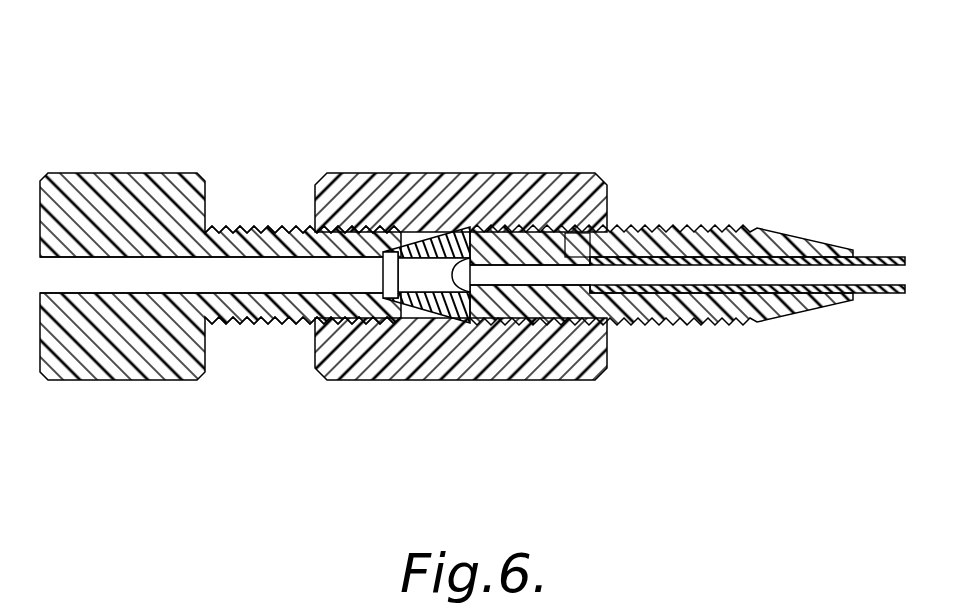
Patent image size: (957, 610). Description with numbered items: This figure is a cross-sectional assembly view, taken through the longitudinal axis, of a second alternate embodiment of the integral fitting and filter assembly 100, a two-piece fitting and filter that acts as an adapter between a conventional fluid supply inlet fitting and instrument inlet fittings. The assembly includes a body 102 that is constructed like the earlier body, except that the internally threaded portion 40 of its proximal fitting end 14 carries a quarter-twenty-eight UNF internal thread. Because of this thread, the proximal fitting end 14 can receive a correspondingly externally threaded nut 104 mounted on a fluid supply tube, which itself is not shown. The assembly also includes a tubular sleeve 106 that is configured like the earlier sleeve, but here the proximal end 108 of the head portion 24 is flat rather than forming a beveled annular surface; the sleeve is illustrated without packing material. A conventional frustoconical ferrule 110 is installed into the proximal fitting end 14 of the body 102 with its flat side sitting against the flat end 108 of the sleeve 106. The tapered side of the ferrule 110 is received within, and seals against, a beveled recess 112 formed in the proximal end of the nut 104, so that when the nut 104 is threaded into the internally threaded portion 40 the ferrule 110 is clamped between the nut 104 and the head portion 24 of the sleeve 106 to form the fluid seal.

The integral fitting and filter assembly 100 is at (766, 37).
The externally threaded nut 104 is at (237, 232).
The internally threaded portion 40 is at (365, 232).
The frustoconical ferrule 110 is at (452, 240).
The proximal fitting end 14 is at (520, 178).
The body 102 is at (477, 239).
The beveled recess 112 is at (358, 324).
The proximal end of the head portion 108 is at (450, 302).
The head portion 24 is at (460, 300).
The tubular sleeve 106 is at (563, 305).